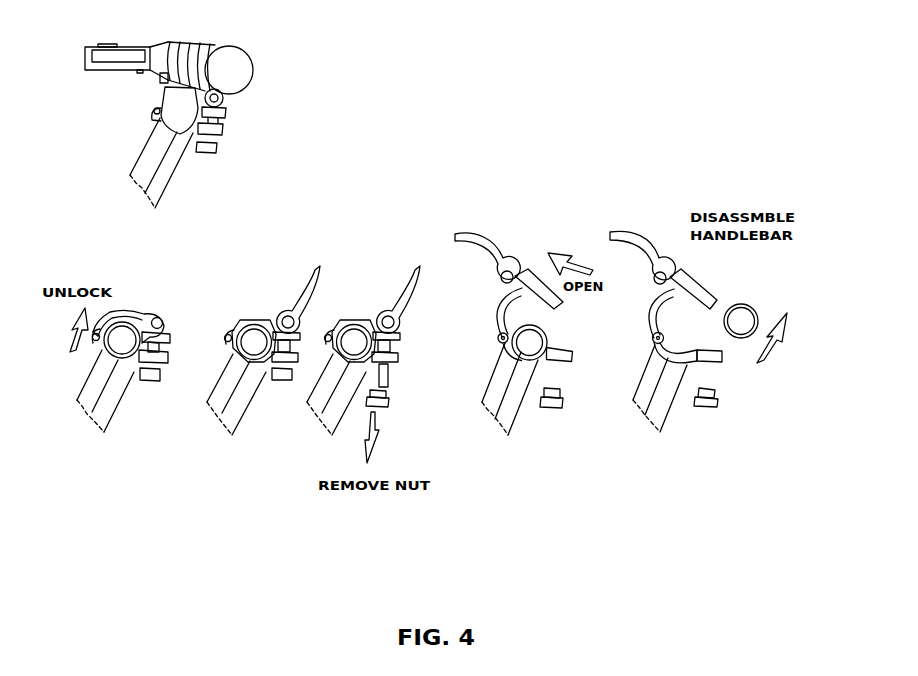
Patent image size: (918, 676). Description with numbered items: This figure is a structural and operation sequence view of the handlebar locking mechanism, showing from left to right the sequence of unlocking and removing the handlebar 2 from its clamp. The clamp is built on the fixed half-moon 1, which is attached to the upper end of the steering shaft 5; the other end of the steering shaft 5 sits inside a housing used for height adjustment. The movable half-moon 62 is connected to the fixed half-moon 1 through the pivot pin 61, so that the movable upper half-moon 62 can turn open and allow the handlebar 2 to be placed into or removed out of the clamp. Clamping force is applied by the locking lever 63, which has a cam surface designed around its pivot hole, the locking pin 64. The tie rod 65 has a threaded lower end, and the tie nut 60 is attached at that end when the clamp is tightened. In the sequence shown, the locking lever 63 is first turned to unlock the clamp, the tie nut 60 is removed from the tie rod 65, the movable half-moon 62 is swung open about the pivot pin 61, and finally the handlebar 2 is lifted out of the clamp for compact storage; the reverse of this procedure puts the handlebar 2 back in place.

The fixed half-moon 1 is at (168, 366).
The handlebar 2 is at (181, 116).
The steering shaft 5 is at (108, 398).
The tie nut 60 is at (151, 384).
The pivot pin 61 is at (501, 334).
The movable half-moon 62 is at (494, 306).
The locking lever 63 is at (477, 231).
The locking pin 64 is at (508, 266).
The tie rod 65 is at (547, 288).